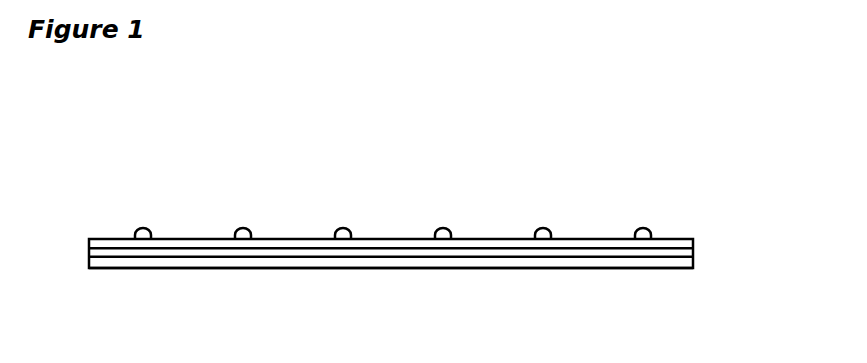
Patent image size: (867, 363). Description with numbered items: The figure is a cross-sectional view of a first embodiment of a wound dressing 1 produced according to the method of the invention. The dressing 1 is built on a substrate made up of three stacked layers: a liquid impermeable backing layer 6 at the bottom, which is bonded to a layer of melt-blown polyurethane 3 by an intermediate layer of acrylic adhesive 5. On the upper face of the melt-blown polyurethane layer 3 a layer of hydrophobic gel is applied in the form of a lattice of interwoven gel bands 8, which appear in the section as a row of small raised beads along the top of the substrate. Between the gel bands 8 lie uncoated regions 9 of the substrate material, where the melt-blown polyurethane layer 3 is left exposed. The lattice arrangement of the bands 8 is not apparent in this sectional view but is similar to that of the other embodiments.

The wound dressing 1 is at (410, 138).
The melt-blown polyurethane layer 3 is at (686, 238).
The acrylic adhesive layer 5 is at (690, 255).
The liquid impermeable backing layer 6 is at (335, 270).
The gel bands 8 is at (548, 230).
The uncoated regions 9 is at (297, 238).